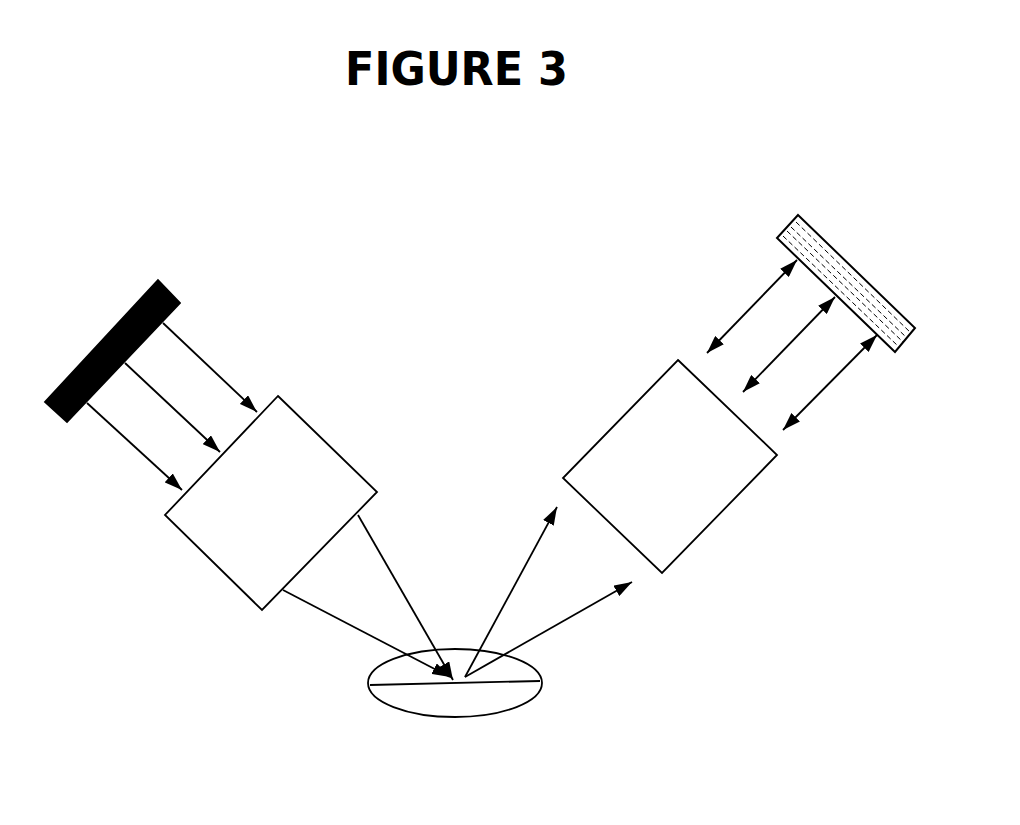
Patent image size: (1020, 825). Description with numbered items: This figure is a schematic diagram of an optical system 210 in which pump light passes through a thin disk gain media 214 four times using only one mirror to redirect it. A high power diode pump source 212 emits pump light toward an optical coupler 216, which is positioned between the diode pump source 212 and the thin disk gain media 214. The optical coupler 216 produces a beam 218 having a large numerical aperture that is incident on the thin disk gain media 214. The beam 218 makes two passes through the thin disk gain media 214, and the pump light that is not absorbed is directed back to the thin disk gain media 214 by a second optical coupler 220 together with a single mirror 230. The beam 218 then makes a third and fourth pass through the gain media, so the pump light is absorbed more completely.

The optical system 210 is at (462, 245).
The high power diode pump source 212 is at (112, 351).
The thin disk gain media 214 is at (456, 697).
The optical coupler 216 is at (271, 503).
The beam 218 is at (368, 597).
The optical coupler 220 is at (670, 466).
The single mirror 230 is at (850, 283).